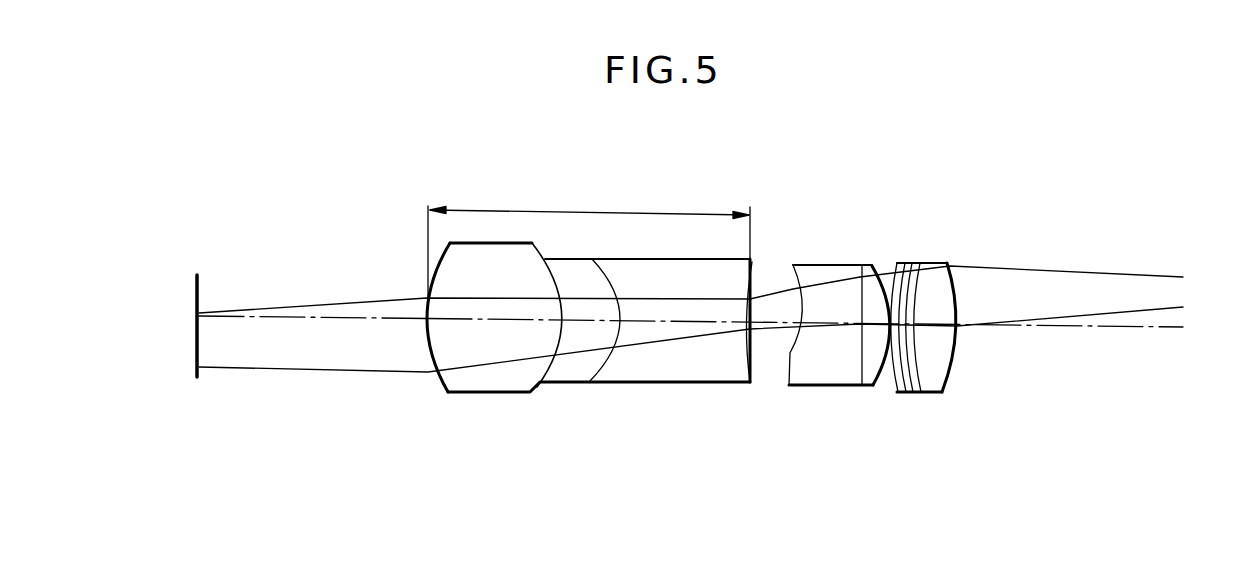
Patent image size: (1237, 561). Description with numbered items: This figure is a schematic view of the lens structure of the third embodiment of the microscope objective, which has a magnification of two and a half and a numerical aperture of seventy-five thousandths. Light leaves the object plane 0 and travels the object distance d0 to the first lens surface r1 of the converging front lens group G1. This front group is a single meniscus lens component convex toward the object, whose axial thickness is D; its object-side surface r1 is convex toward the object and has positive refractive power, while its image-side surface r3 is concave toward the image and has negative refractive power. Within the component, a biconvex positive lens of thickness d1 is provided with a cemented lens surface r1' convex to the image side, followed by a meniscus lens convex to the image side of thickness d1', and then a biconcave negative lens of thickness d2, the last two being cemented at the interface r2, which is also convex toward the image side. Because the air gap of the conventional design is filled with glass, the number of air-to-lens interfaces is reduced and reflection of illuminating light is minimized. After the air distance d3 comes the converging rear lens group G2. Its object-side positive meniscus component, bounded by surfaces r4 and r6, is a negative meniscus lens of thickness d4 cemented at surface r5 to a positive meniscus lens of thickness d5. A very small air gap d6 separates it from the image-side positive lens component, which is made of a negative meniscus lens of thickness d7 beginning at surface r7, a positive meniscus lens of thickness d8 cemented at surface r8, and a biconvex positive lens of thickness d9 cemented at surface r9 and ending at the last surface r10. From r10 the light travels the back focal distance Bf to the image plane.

The object plane 0 is at (200, 289).
The object distance d0 is at (313, 331).
The converging front lens group G1 is at (753, 168).
The converging rear lens group G2 is at (948, 173).
The axial thickness of meniscus lens component D is at (589, 240).
The object-side lens surface r1 is at (438, 350).
The cemented lens surface r1' is at (537, 350).
The cemented interface r2 is at (595, 380).
The image-side lens surface r3 is at (748, 378).
The fourth lens surface r4 is at (789, 375).
The fifth lens surface r5 is at (857, 372).
The sixth lens surface r6 is at (888, 375).
The seventh lens surface r7 is at (900, 382).
The eighth lens surface r8 is at (926, 372).
The ninth lens surface r9 is at (957, 372).
The tenth lens surface r10 is at (950, 368).
The first lens thickness d1 is at (494, 296).
The meniscus lens thickness d1' is at (591, 296).
The biconcave lens thickness d2 is at (753, 320).
The air gap between groups d3 is at (772, 322).
The negative meniscus lens thickness d4 is at (834, 327).
The positive meniscus lens thickness d5 is at (879, 327).
The air gap d6 is at (893, 308).
The negative meniscus lens thickness d7 is at (906, 302).
The positive meniscus lens thickness d8 is at (913, 306).
The biconvex lens thickness d9 is at (933, 323).
The back focal distance Bf is at (1013, 327).